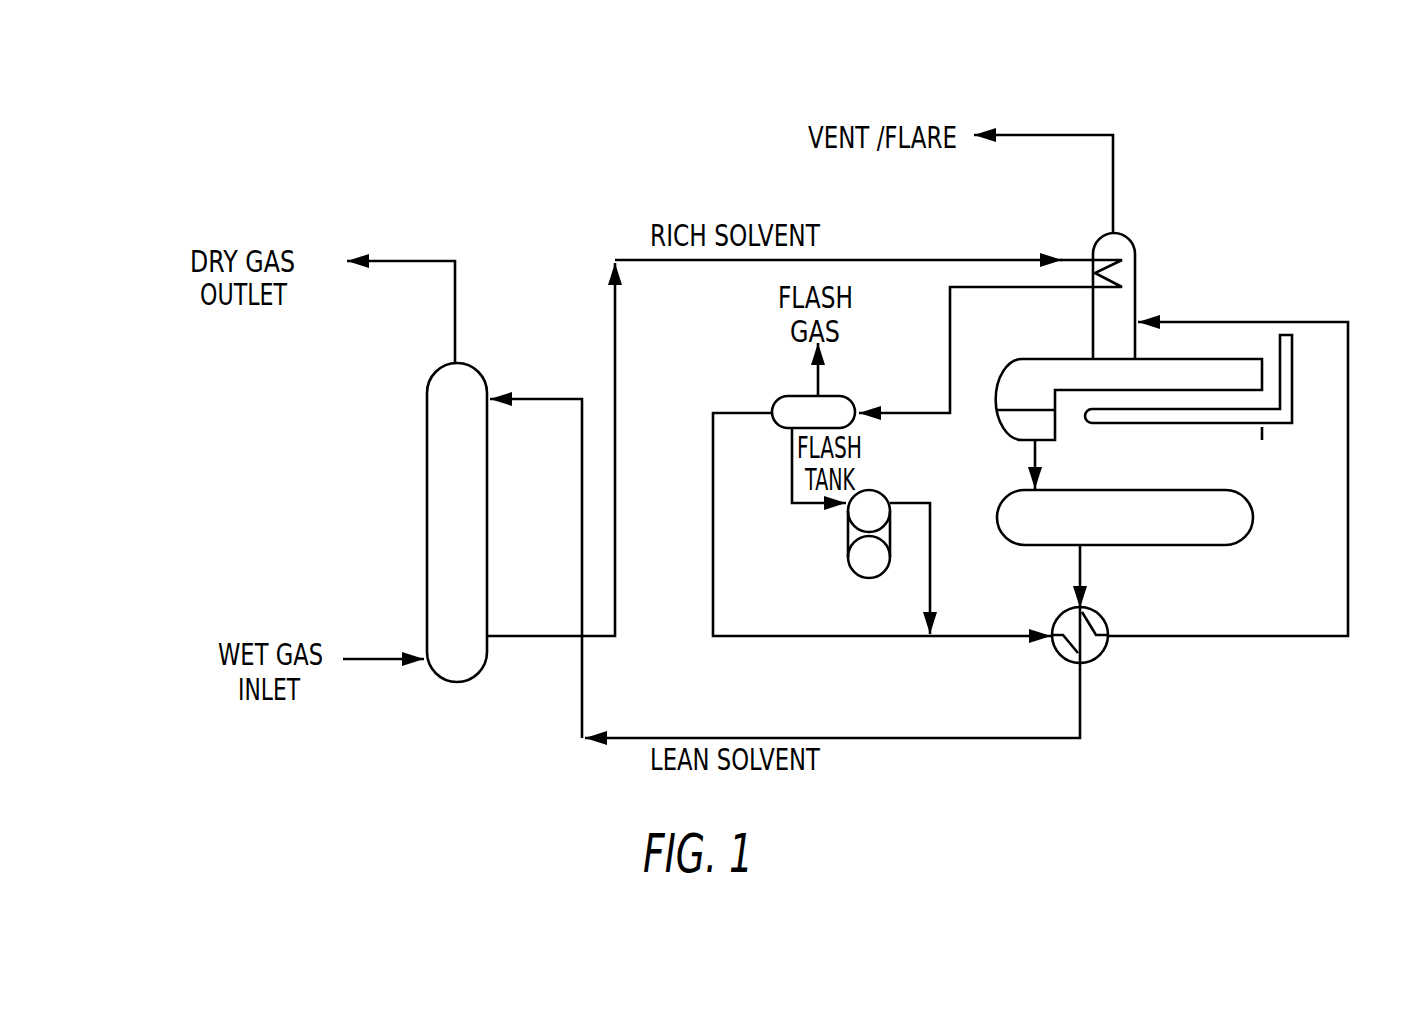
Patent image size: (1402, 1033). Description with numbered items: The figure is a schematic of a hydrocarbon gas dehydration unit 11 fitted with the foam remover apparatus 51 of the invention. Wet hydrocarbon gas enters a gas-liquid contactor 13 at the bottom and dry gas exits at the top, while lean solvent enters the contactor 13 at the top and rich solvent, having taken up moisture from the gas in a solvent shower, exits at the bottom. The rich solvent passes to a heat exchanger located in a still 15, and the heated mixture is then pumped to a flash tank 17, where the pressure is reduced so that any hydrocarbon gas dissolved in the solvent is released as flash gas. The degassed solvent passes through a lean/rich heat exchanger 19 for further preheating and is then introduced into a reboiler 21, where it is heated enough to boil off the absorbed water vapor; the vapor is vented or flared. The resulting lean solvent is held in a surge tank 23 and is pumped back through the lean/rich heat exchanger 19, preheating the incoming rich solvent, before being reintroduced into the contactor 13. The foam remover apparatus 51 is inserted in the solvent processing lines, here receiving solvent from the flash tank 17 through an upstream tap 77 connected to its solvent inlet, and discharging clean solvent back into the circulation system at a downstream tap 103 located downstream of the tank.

The hydrocarbon gas dehydration unit 11 is at (368, 172).
The gas-liquid contactor 13 is at (427, 396).
The still 15 is at (1132, 240).
The flash tank 17 is at (784, 396).
The lean/rich heat exchanger 19 is at (1100, 615).
The reboiler 21 is at (1223, 363).
The surge tank 23 is at (1225, 490).
The foam remover apparatus 51 is at (873, 490).
The upstream tap 77 is at (808, 505).
The downstream tap 103 is at (931, 560).